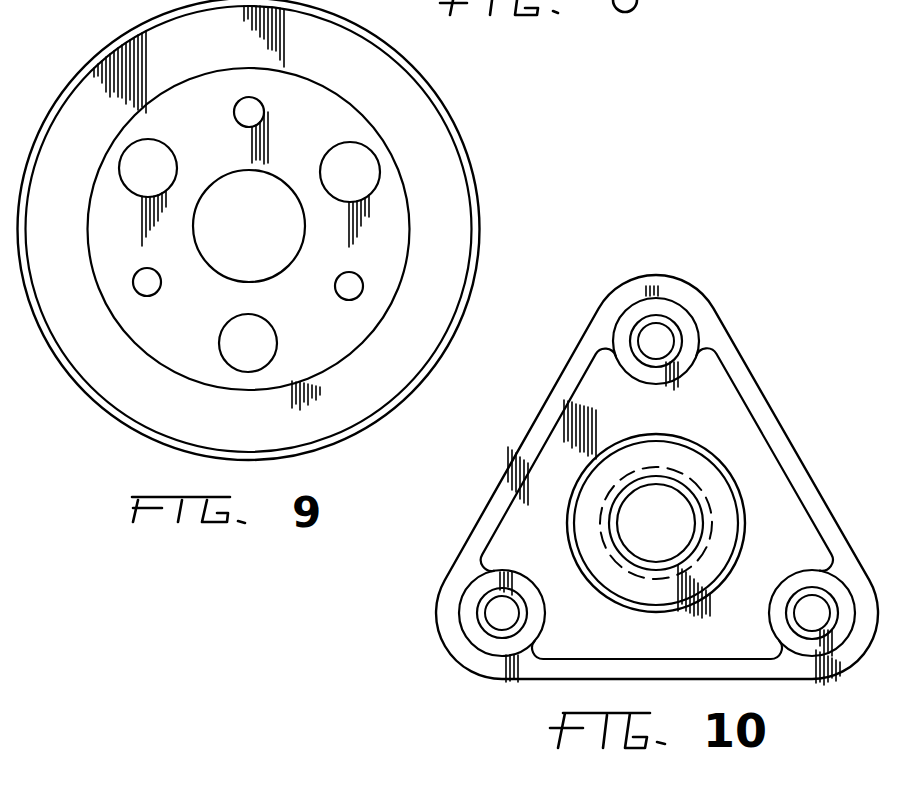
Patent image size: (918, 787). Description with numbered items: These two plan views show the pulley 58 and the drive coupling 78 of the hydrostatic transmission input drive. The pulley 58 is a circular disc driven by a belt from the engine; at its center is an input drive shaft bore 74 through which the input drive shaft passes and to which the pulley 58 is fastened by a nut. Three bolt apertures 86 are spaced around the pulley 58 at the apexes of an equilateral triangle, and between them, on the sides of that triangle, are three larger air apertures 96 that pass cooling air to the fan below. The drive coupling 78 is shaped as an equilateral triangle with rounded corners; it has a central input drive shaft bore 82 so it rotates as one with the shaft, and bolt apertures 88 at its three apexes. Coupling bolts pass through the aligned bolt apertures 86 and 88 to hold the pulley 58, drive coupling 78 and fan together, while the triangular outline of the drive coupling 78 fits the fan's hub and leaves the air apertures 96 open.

In FIG. 9, the pulley 58 is at (487, 175).
In FIG. 9, the input drive shaft bore 74 is at (258, 279).
In FIG. 9, the bolt apertures 86 is at (261, 103).
In FIG. 9, the air apertures 96 is at (127, 156).
In FIG. 10, the drive coupling 78 is at (788, 412).
In FIG. 10, the bolt apertures 88 is at (670, 337).
In FIG. 10, the input drive shaft bore 82 is at (638, 553).